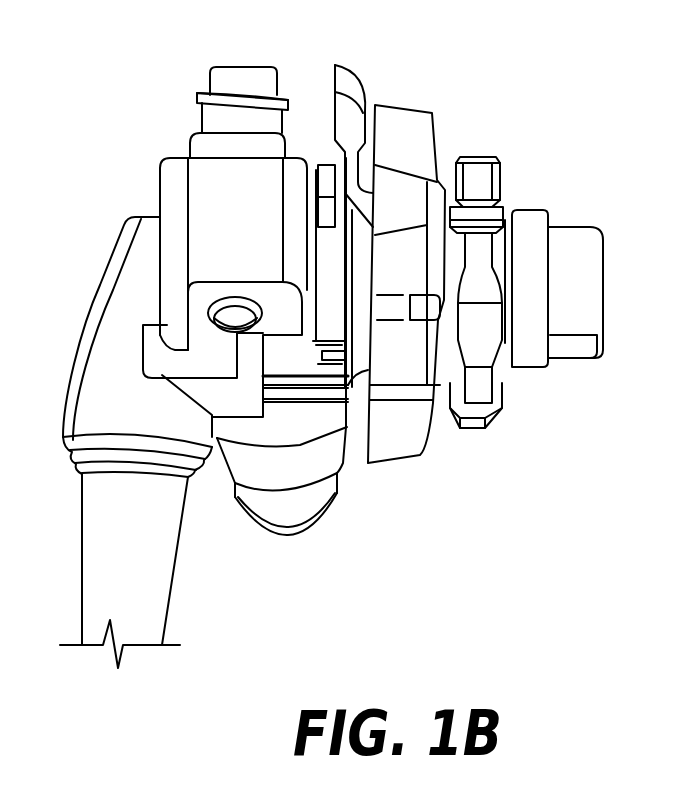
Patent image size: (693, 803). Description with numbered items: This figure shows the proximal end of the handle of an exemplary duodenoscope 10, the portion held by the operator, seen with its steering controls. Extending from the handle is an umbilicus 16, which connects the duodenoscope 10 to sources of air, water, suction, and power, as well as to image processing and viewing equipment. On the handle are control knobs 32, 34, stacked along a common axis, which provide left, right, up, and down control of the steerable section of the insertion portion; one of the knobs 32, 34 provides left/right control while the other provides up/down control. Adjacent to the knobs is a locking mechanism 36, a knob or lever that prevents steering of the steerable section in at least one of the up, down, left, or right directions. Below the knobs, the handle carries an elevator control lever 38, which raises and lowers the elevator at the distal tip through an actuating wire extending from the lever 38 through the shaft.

The duodenoscope 10 is at (458, 548).
The umbilicus 16 is at (133, 555).
The control knob 32 is at (478, 190).
The control knob 34 is at (400, 150).
The locking mechanism 36 is at (588, 298).
The elevator control lever 38 is at (303, 393).